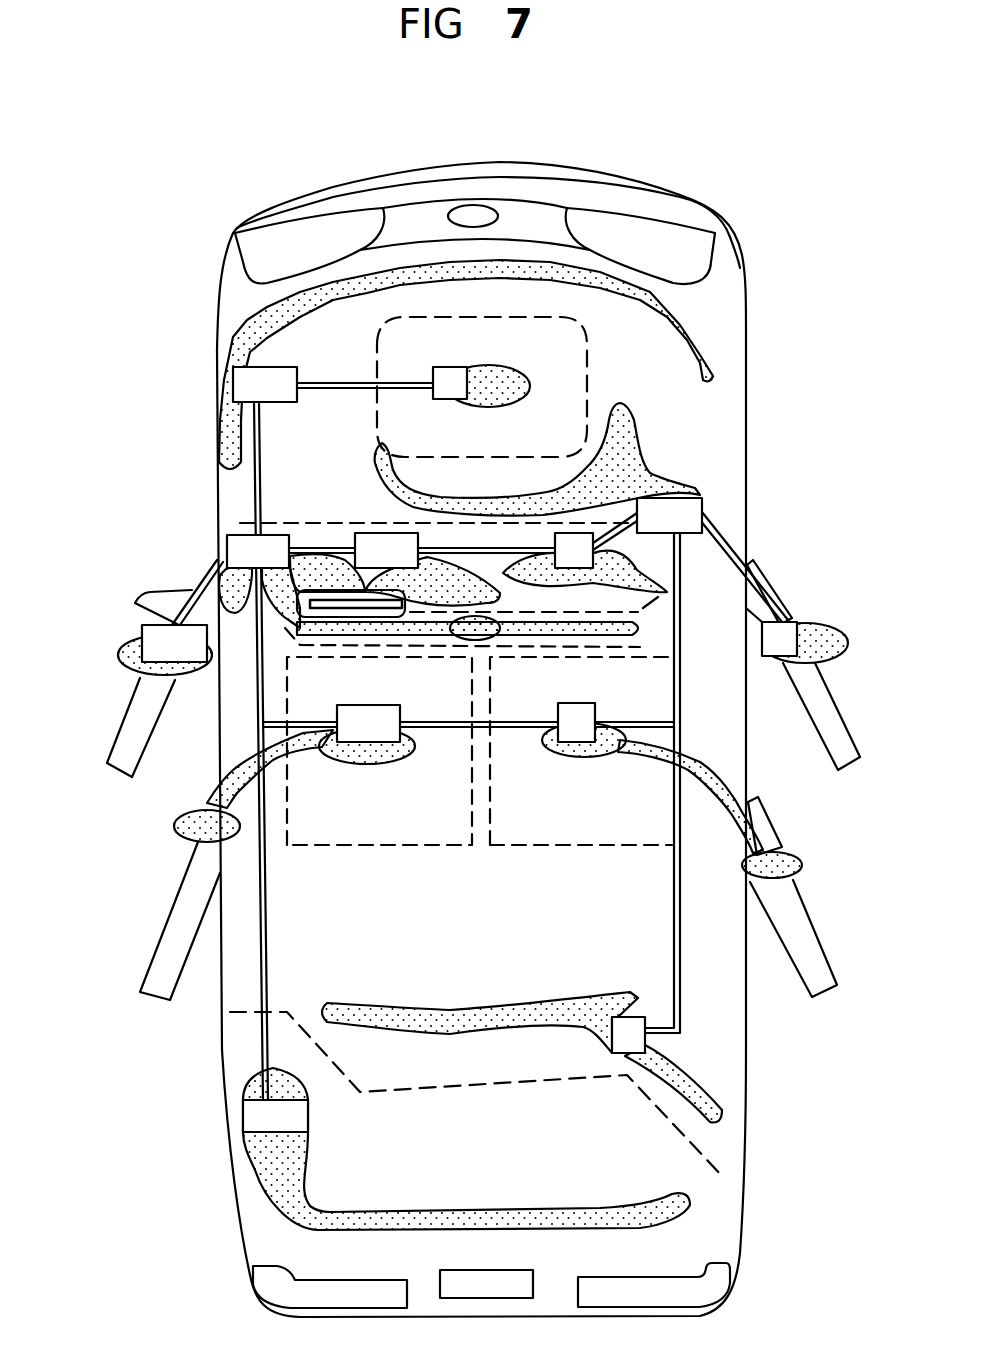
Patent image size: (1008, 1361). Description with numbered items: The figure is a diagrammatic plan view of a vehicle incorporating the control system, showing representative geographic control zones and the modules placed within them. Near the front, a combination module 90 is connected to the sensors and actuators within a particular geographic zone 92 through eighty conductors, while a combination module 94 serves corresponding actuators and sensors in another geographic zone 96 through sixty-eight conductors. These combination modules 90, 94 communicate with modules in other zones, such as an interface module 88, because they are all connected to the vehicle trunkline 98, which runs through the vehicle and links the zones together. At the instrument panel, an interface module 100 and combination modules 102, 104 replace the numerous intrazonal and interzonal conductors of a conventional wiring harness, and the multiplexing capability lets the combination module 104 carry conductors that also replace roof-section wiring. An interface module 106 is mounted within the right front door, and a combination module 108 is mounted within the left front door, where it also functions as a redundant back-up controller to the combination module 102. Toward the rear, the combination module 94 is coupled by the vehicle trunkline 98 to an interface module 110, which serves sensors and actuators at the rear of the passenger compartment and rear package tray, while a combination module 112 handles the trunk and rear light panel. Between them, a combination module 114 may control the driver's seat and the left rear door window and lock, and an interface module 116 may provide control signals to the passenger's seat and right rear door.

The interface module 88 is at (450, 367).
The combination module 90 is at (284, 367).
The geographic zone 92 is at (232, 385).
The combination module 94 is at (668, 497).
The geographic zone 96 is at (627, 405).
The vehicle trunkline 98 is at (277, 882).
The interface module 100 is at (564, 533).
The combination module 102 is at (227, 540).
The combination module 104 is at (373, 533).
The interface module 106 is at (803, 627).
The combination module 108 is at (142, 632).
The interface module 110 is at (610, 1052).
The combination module 112 is at (243, 1120).
The combination module 114 is at (377, 705).
The interface module 116 is at (576, 703).